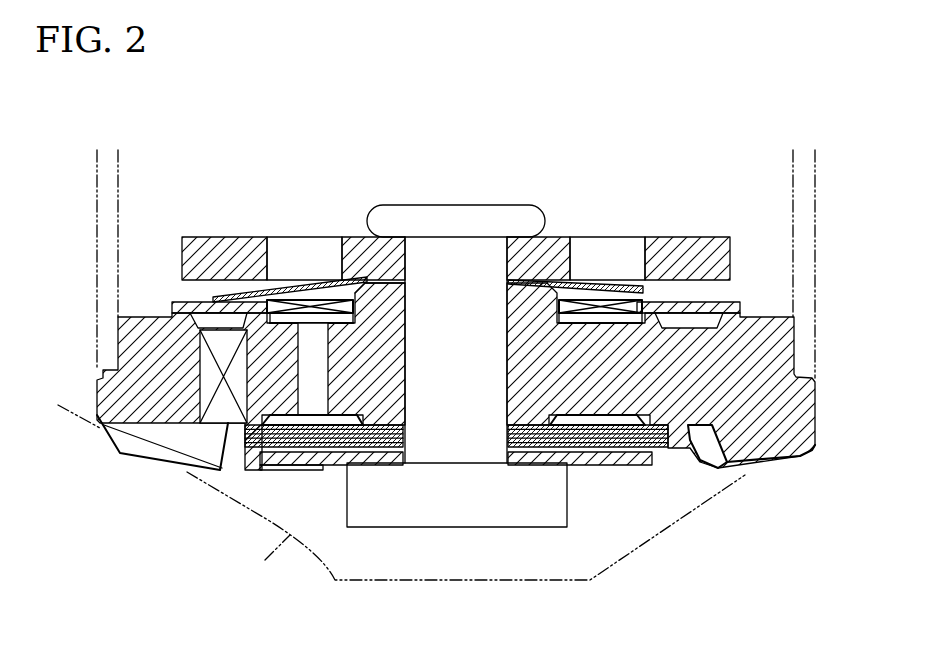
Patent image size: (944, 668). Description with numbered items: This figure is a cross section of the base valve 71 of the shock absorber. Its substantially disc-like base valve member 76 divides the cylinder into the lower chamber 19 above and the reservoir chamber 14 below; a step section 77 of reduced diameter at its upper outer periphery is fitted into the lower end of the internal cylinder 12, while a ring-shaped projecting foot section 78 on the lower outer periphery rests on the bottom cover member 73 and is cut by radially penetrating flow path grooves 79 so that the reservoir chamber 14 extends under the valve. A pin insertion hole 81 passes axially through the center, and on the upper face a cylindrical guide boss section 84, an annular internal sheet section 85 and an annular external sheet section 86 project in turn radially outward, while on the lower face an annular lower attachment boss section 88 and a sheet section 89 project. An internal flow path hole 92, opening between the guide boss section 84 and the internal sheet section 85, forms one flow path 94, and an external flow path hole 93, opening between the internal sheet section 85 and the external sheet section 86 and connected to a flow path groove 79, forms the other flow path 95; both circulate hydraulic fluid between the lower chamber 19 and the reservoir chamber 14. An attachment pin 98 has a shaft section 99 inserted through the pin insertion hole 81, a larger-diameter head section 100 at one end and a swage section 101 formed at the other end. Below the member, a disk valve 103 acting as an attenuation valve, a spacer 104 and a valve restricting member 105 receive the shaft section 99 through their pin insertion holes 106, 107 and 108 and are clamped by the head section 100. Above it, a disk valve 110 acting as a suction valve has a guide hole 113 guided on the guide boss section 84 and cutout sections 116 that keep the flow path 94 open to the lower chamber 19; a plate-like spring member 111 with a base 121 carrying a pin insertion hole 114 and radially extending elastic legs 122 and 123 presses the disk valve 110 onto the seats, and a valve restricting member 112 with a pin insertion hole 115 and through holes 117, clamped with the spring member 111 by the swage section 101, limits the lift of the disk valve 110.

The internal cylinder 12 is at (815, 190).
The reservoir chamber 14 is at (623, 532).
The lower chamber 19 is at (160, 192).
The base valve 71 is at (742, 198).
The bottom cover member 73 is at (265, 560).
The base valve member 76 is at (777, 466).
The step section 77 is at (100, 353).
The projecting foot section 78 is at (787, 446).
The flow path groove 79 is at (163, 455).
The pin insertion hole 81 is at (507, 333).
The guide boss section 84 is at (368, 282).
The internal sheet section 85 is at (265, 325).
The external sheet section 86 is at (172, 302).
The lower attachment boss section 88 is at (340, 462).
The sheet section 89 is at (263, 427).
The flow path hole 92 is at (296, 372).
The flow path hole 93 is at (212, 428).
The flow path 94 is at (205, 403).
The flow path 95 is at (313, 390).
The attachment pin 98 is at (534, 528).
The shaft section 99 is at (508, 390).
The head section 100 is at (487, 512).
The swage section 101 is at (520, 210).
The disk valve 103 is at (660, 446).
The spacer 104 is at (540, 466).
The valve restricting member 105 is at (615, 464).
The pin insertion hole 106 is at (407, 437).
The pin insertion hole 107 is at (398, 447).
The pin insertion hole 108 is at (383, 430).
The disk valve 110 is at (740, 302).
The spring member 111 is at (604, 282).
The valve restricting member 112 is at (690, 250).
The guide hole 113 is at (535, 312).
The pin insertion hole 114 is at (420, 283).
The pin insertion hole 115 is at (407, 257).
The cutout section 116 is at (637, 322).
The through hole 117 is at (573, 253).
The base 121 is at (375, 285).
The elastic leg 122 is at (232, 293).
The elastic leg 123 is at (645, 285).